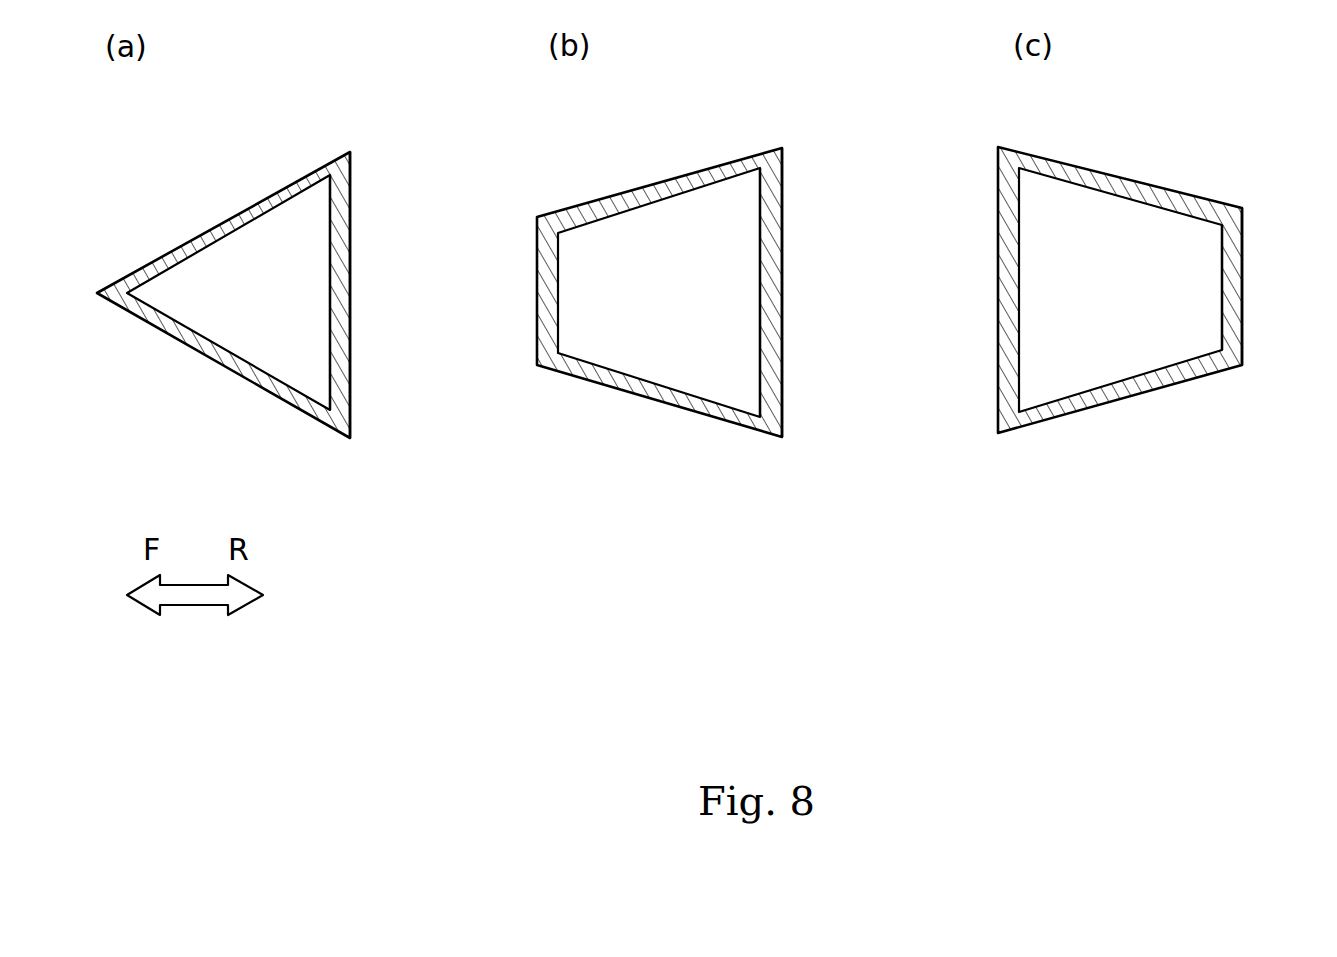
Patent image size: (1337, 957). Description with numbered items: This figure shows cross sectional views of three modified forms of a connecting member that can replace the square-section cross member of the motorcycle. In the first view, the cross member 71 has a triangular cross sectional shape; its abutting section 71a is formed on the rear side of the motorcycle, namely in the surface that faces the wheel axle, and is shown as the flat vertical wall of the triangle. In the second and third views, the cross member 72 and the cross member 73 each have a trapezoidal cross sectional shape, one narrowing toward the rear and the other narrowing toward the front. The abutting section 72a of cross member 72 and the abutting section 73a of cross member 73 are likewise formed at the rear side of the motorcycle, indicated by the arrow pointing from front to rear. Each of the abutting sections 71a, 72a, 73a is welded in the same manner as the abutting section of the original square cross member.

The cross member 71 is at (269, 264).
The abutting section 71a is at (333, 292).
The cross member 72 is at (705, 263).
The abutting section 72a is at (767, 292).
The cross member 73 is at (1167, 268).
The abutting section 73a is at (1225, 288).